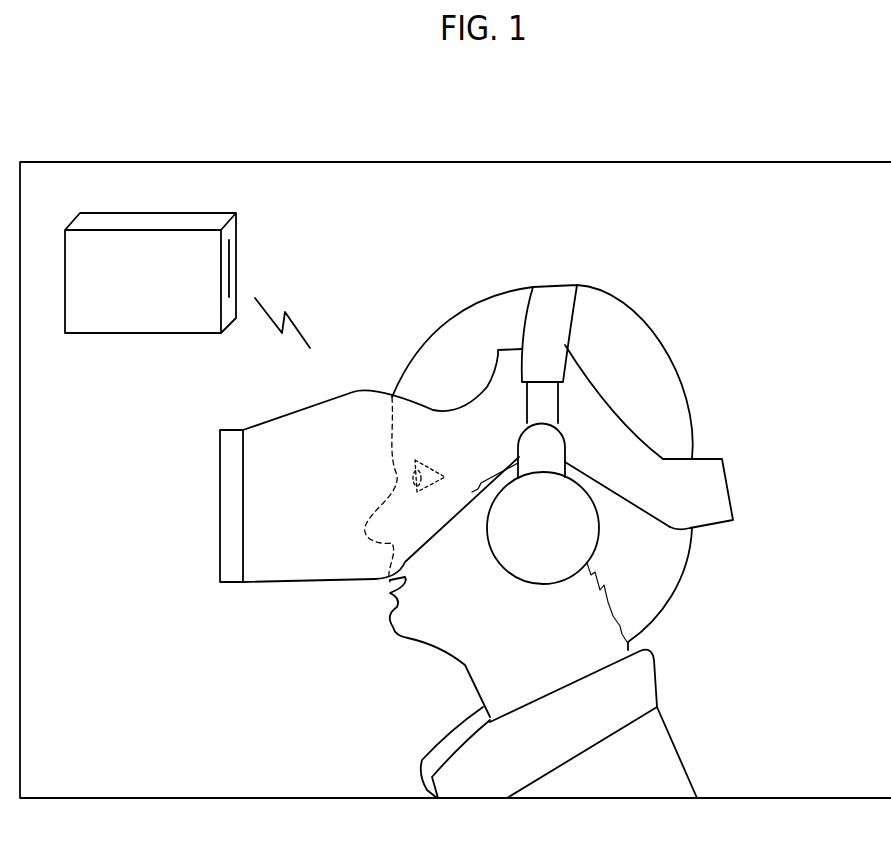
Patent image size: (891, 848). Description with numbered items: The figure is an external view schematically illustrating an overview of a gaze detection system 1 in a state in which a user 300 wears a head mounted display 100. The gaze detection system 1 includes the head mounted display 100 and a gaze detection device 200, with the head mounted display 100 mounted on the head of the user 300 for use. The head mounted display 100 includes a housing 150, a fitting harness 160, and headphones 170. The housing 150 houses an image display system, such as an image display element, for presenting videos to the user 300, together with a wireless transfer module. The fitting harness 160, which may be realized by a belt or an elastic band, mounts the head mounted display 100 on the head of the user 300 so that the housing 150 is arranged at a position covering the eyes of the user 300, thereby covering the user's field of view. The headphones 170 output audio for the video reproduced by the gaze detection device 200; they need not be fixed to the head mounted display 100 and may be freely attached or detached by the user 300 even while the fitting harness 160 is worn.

The gaze detection system 1 is at (518, 162).
The head mounted display 100 is at (371, 471).
The housing 150 is at (297, 583).
The fitting harness 160 is at (733, 488).
The headphones 170 is at (551, 286).
The gaze detection device 200 is at (238, 237).
The user 300 is at (638, 444).